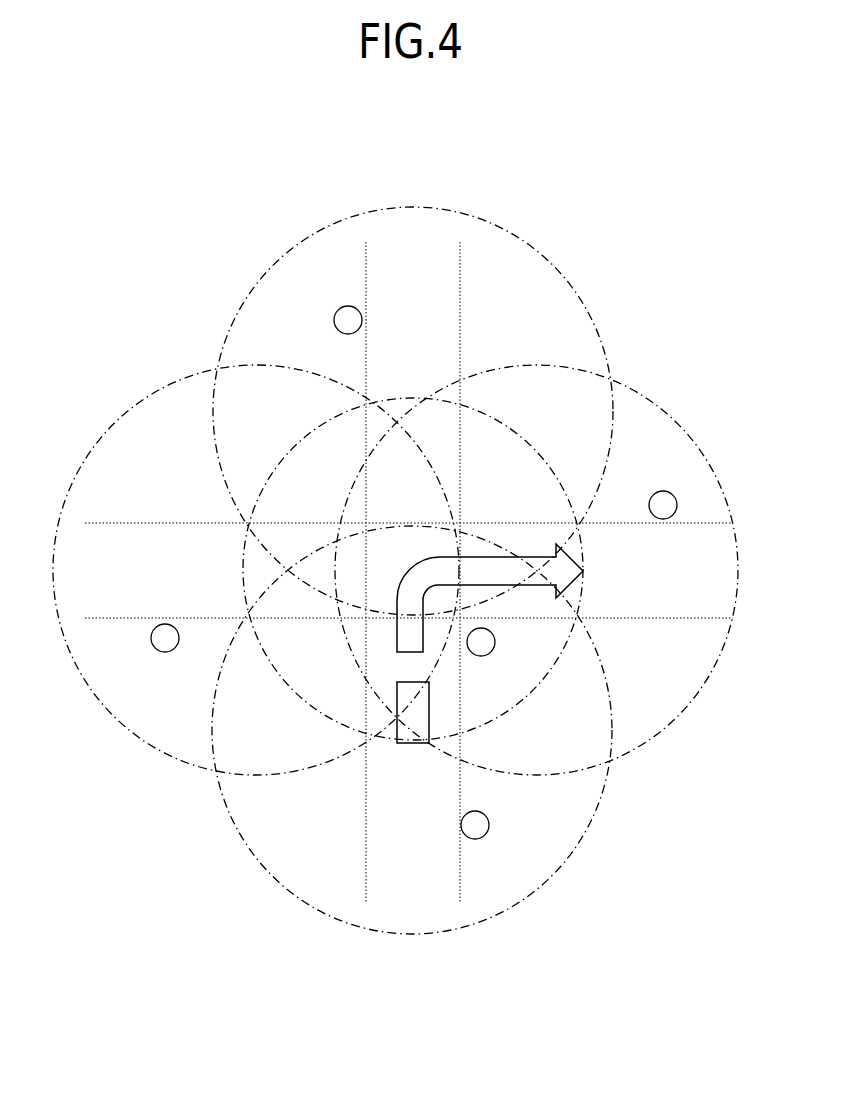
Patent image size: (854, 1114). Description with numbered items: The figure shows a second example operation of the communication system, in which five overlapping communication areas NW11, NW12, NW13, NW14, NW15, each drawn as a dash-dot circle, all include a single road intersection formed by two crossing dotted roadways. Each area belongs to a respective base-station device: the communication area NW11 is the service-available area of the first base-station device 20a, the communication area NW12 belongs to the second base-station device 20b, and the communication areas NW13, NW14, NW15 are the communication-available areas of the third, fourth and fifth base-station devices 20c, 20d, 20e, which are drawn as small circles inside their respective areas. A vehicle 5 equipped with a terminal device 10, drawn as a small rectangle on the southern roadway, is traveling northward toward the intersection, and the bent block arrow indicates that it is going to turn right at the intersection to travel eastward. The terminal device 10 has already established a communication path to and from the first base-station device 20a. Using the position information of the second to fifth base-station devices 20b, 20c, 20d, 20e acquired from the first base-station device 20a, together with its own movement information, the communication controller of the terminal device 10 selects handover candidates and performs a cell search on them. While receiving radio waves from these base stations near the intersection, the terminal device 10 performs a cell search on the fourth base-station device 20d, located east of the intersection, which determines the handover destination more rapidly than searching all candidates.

The communication area NW11 is at (532, 700).
The communication area NW12 is at (121, 722).
The communication area NW13 is at (266, 274).
The communication area NW14 is at (646, 397).
The communication area NW15 is at (583, 838).
The vehicle 5 is at (400, 734).
The terminal device 10 is at (408, 735).
The first base-station device 20a is at (480, 655).
The second base-station device 20b is at (155, 650).
The third base-station device 20c is at (339, 308).
The fourth base-station device 20d is at (655, 491).
The fifth base-station device 20e is at (486, 815).